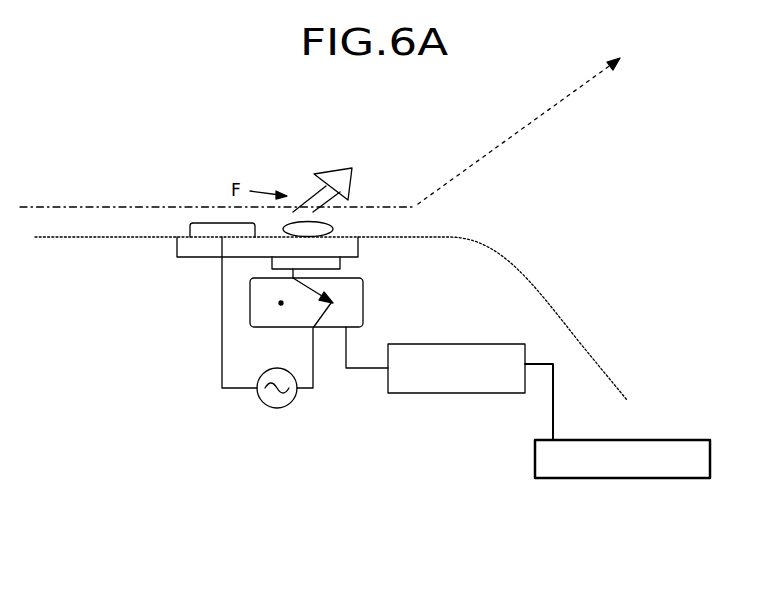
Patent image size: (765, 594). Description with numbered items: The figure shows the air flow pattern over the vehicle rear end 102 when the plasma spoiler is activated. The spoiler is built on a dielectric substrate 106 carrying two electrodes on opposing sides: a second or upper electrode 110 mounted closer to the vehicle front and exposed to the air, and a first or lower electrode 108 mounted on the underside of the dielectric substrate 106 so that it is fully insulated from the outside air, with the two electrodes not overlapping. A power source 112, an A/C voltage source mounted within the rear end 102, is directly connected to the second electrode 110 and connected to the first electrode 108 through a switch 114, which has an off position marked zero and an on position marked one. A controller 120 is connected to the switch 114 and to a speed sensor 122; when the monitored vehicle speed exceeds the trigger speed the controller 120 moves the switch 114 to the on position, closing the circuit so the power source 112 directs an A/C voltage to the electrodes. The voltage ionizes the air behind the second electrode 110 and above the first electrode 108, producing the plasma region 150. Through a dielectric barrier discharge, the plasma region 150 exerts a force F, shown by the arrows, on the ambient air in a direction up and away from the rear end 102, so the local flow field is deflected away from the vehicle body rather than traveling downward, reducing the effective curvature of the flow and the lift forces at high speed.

The rear end 102 is at (68, 168).
The dielectric substrate 106 is at (177, 250).
The first electrode 108 is at (340, 263).
The second electrode 110 is at (190, 226).
The power source 112 is at (277, 410).
The switch 114 is at (363, 290).
The controller 120 is at (425, 393).
The speed sensor 122 is at (639, 478).
The plasma region 150 is at (333, 229).